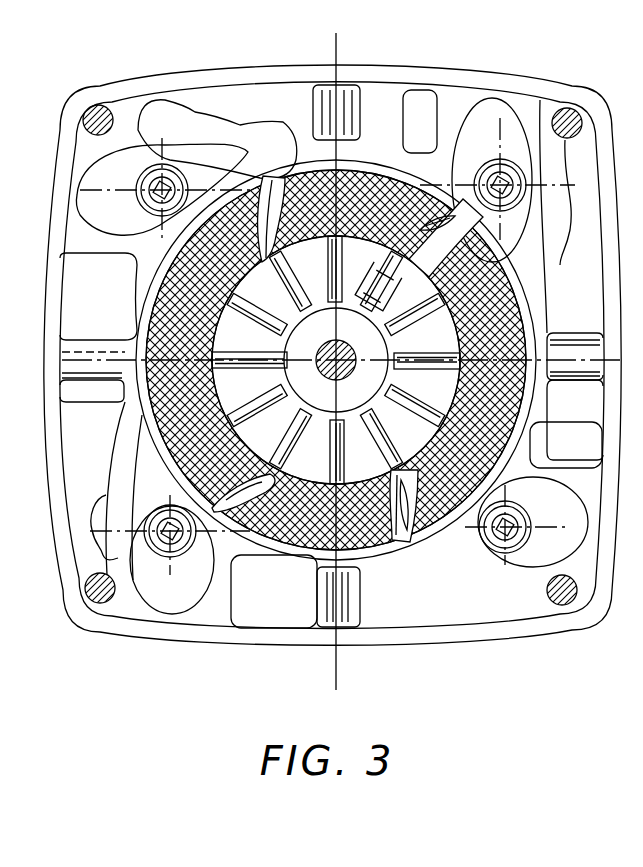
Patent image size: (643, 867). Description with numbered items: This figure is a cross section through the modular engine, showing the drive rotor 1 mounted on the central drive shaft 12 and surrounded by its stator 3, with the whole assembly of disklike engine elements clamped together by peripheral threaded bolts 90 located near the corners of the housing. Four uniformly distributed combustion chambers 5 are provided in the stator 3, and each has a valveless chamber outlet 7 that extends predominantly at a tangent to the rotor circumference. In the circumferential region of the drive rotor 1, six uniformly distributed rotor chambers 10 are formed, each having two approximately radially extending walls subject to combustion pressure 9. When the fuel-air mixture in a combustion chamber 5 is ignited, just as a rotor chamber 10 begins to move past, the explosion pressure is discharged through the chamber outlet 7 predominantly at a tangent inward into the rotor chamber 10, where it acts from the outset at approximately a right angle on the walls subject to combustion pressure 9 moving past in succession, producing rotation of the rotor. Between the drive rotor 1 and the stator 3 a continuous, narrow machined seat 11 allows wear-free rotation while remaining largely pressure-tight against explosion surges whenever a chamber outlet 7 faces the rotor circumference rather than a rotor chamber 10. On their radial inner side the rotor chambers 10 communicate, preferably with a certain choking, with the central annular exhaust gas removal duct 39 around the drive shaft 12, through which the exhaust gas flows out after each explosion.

The drive rotor 1 is at (153, 288).
The stator 3 is at (157, 315).
The combustion chamber 5 is at (485, 145).
The chamber outlet 7 is at (252, 172).
The wall subject to combustion pressure 9 is at (264, 258).
The rotor chamber 10 is at (350, 457).
The machined seat 11 is at (385, 170).
The central drive shaft 12 is at (358, 340).
The exhaust gas removal duct 39 is at (308, 300).
The peripheral threaded bolt 90 is at (88, 112).